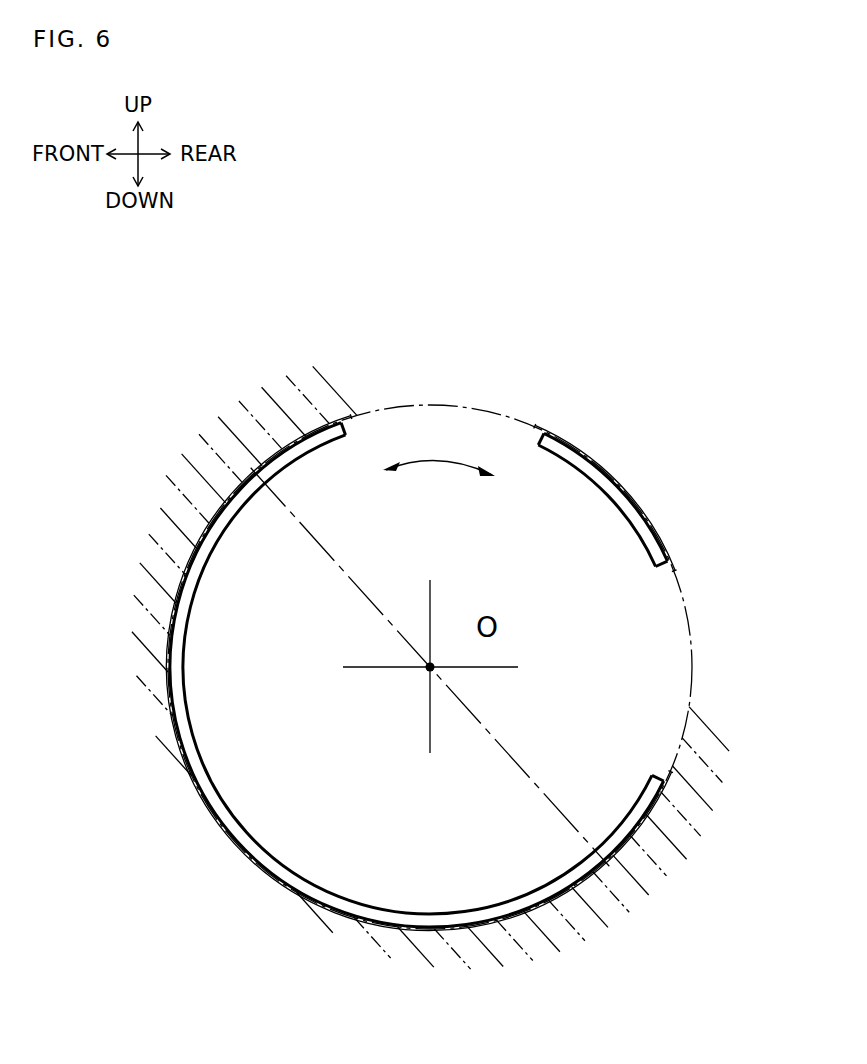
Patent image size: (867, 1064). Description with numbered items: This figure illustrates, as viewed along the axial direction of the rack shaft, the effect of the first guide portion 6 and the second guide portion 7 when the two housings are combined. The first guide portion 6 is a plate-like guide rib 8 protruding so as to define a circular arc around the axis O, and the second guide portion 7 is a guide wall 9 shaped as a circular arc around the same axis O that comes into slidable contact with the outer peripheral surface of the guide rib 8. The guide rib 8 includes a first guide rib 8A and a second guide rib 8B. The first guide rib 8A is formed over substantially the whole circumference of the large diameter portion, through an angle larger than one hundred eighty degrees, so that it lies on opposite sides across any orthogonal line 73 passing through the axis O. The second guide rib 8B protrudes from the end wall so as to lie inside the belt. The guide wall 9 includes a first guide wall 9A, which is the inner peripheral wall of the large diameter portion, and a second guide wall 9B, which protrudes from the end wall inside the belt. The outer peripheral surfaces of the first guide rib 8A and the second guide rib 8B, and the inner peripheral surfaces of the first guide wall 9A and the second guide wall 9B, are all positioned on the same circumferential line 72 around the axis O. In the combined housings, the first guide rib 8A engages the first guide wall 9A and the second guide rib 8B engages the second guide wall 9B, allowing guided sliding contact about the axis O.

The first guide portion 6 is at (408, 675).
The second guide portion 7 is at (408, 672).
The guide rib 8 is at (408, 675).
The first guide rib 8A is at (168, 627).
The second guide rib 8B is at (657, 542).
The guide wall 9 is at (408, 672).
The first guide wall 9A is at (187, 512).
The second guide wall 9B is at (623, 479).
The circumferential line 72 is at (692, 672).
The orthogonal line 73 is at (648, 905).
The axis O is at (433, 664).